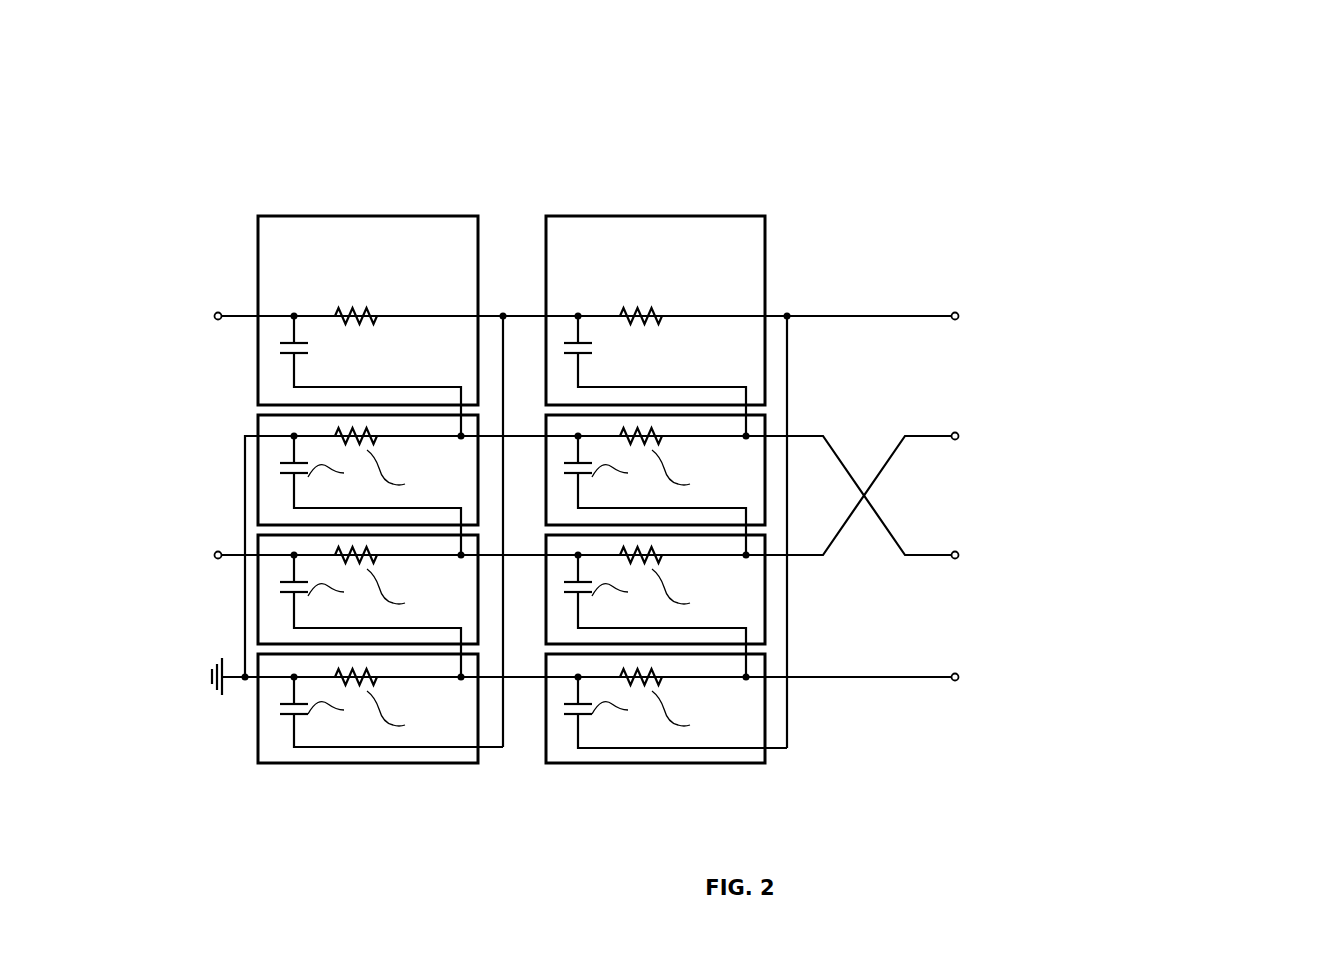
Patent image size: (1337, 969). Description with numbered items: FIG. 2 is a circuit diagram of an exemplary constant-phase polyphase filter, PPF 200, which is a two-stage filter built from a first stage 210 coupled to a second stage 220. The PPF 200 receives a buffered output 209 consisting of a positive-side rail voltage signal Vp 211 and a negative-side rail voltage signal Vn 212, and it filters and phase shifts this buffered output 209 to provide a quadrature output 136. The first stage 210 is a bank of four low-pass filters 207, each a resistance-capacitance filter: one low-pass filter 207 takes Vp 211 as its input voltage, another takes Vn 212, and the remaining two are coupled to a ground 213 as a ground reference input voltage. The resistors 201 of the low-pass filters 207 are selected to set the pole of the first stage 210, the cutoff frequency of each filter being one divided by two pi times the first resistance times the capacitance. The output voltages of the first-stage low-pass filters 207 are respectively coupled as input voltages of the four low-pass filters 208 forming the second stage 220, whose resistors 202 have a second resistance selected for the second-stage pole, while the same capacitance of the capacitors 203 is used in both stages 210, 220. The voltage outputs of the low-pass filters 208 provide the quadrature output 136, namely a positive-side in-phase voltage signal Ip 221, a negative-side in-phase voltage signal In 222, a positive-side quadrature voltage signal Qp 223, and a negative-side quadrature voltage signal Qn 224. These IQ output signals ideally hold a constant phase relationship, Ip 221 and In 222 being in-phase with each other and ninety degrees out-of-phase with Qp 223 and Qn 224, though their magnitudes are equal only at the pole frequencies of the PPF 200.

The constant-phase polyphase filter 200 is at (696, 428).
The first stage 210 is at (508, 168).
The second stage 220 is at (536, 168).
The low-pass filter 207 is at (278, 213).
The low-pass filter 208 is at (572, 213).
The resistor 201 is at (377, 307).
The resistor 202 is at (661, 307).
The capacitor 203 is at (310, 354).
The buffered output 209 is at (110, 252).
The positive-side rail voltage signal 211 is at (213, 313).
The negative-side rail voltage signal 212 is at (213, 552).
The ground 213 is at (210, 672).
The positive-side in-phase voltage signal 221 is at (960, 312).
The negative-side in-phase voltage signal 222 is at (960, 432).
The positive-side quadrature voltage signal 223 is at (960, 551).
The negative-side quadrature voltage signal 224 is at (960, 673).
The quadrature output 136 is at (1061, 262).